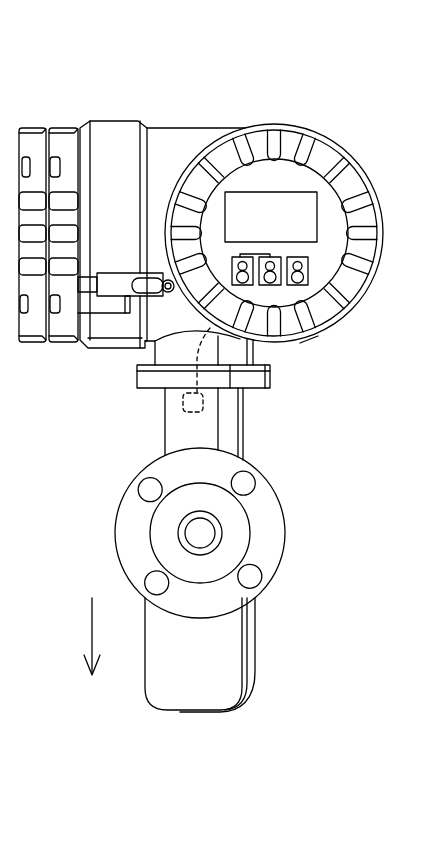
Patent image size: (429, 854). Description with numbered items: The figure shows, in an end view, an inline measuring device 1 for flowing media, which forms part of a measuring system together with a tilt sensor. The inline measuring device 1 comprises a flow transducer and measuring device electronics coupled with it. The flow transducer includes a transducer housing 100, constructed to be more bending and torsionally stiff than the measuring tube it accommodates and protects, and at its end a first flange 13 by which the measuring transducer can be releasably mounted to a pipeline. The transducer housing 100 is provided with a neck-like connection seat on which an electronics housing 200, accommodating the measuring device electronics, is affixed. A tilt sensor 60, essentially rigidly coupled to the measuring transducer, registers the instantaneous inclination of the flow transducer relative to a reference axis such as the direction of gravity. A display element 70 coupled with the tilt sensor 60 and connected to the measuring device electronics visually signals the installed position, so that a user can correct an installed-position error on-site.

The inline measuring device 1 is at (248, 94).
The electronics housing 200 is at (183, 148).
The display element 70 is at (293, 232).
The tilt sensor 60 is at (187, 417).
The first flange 13 is at (268, 537).
The transducer housing 100 is at (225, 650).